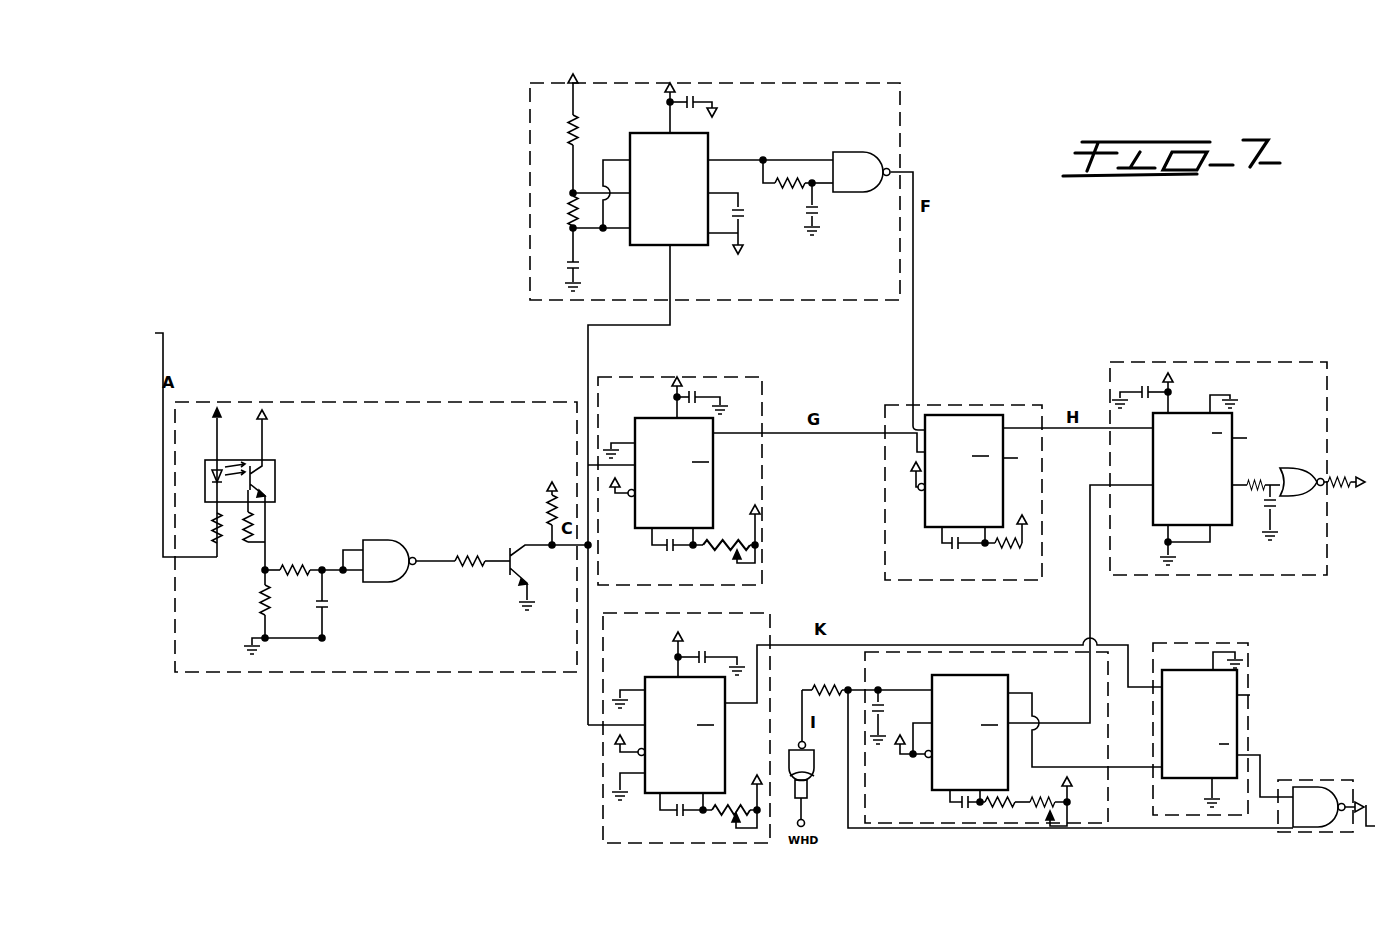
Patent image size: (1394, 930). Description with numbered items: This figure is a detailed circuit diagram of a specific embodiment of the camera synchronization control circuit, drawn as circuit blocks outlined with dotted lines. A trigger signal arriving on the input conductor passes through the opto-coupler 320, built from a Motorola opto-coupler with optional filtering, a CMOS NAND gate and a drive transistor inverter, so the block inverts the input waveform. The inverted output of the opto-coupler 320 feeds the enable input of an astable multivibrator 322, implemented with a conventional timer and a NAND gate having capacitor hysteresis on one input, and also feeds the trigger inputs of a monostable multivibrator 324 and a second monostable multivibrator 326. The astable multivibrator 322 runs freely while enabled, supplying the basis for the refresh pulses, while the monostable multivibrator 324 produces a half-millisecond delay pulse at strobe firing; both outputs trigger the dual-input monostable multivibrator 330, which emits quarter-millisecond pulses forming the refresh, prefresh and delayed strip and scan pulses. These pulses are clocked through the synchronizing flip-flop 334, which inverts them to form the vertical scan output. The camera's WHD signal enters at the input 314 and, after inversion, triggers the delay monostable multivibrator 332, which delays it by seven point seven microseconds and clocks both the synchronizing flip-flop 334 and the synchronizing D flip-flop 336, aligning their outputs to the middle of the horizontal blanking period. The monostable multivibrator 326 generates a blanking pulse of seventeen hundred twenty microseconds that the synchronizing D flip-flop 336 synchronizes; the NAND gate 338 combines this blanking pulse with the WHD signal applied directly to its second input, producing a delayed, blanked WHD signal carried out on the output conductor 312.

The output conductor 312 is at (1365, 794).
The input 314 is at (1350, 487).
The opto-coupler 320 is at (393, 378).
The astable multivibrator 322 is at (900, 135).
The monostable multivibrator 324 is at (716, 377).
The monostable multivibrator 326 is at (680, 613).
The monostable multivibrator 330 is at (955, 405).
The delay monostable multivibrator 332 is at (1129, 732).
The synchronizing flip-flop 334 is at (1207, 362).
The synchronizing D flip-flop 336 is at (1190, 643).
The NAND gate 338 is at (1290, 779).